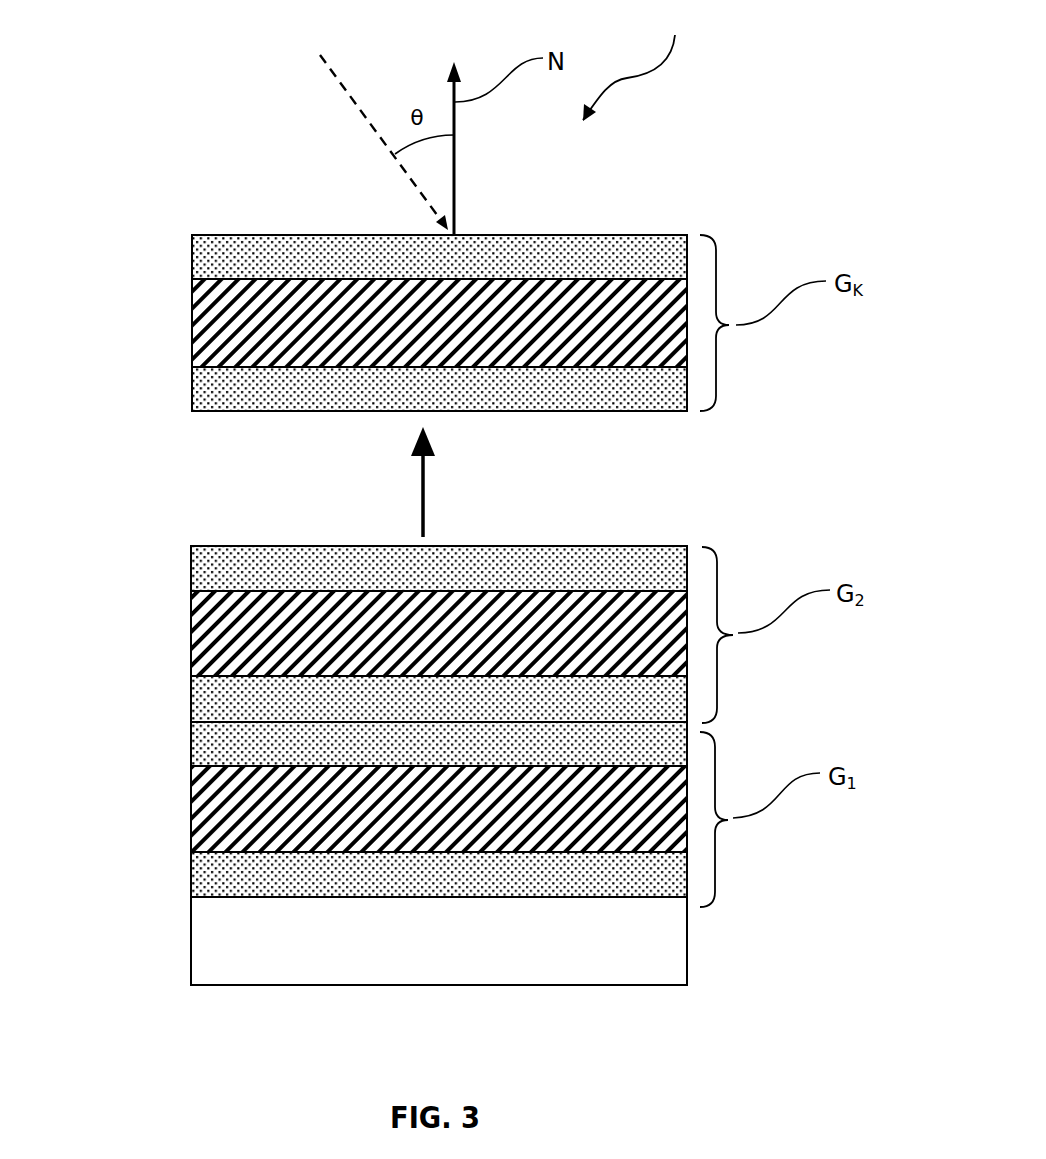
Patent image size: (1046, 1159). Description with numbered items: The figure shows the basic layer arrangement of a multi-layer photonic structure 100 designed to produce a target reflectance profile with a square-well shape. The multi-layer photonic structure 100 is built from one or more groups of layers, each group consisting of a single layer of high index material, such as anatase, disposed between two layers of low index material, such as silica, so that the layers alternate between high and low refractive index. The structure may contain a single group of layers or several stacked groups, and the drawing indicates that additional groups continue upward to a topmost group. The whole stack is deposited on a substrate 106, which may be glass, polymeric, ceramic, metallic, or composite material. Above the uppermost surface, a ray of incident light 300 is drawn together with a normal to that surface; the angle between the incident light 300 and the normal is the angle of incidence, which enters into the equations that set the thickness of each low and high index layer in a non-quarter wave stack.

The multi-layer photonic structure 100 is at (644, 65).
The substrate 106 is at (687, 939).
The incident light 300 is at (353, 101).